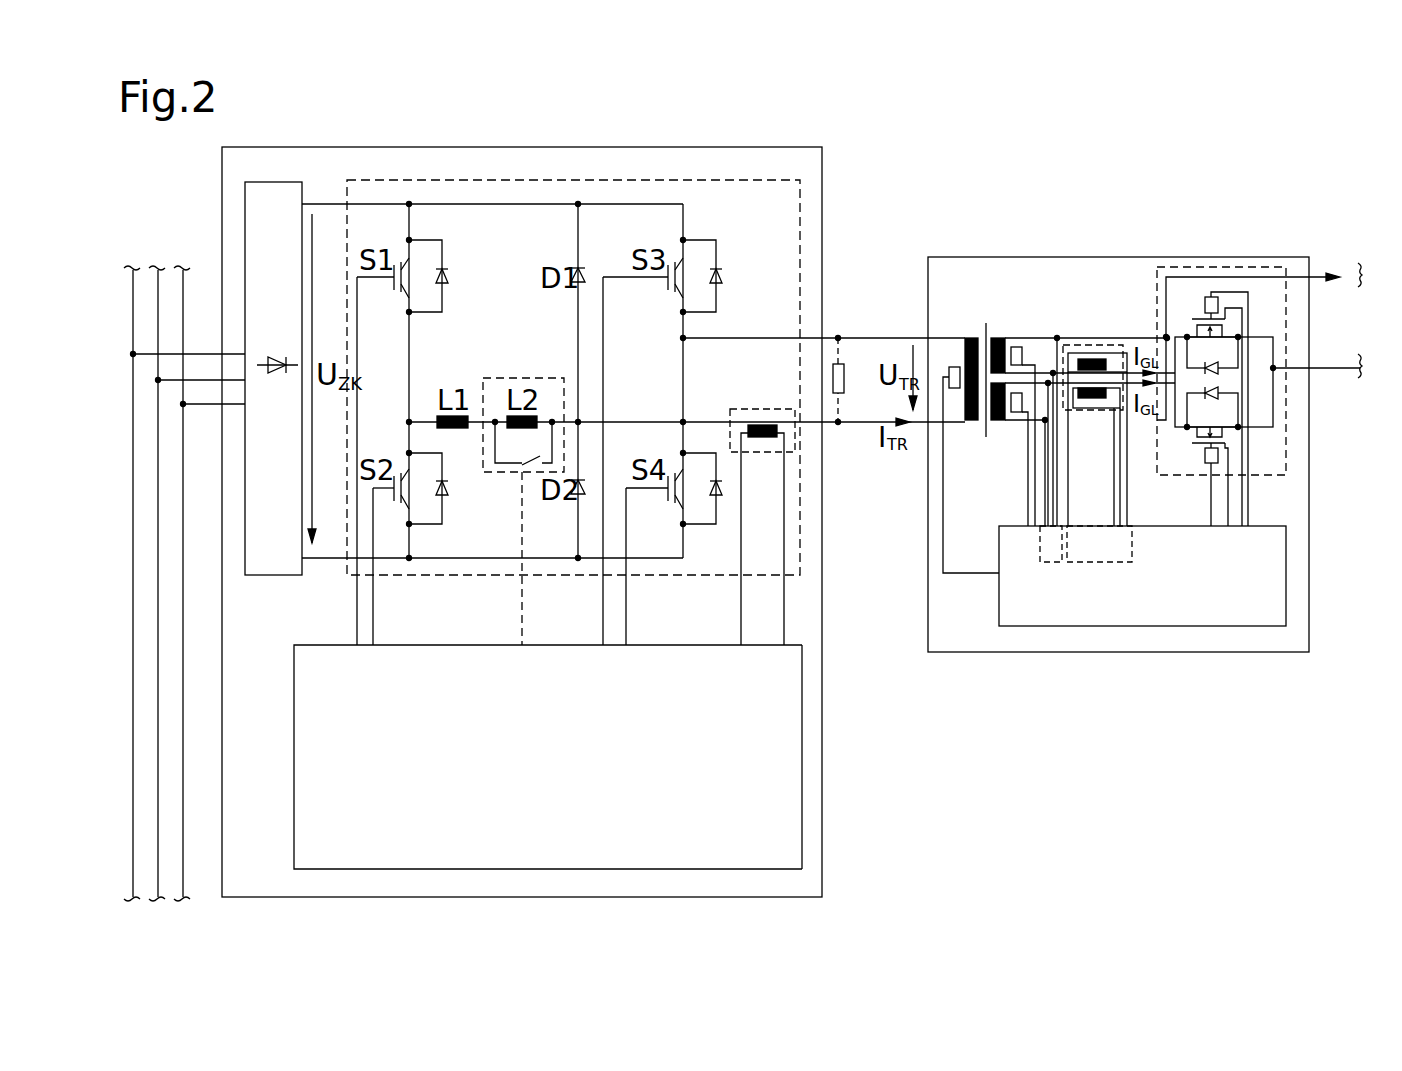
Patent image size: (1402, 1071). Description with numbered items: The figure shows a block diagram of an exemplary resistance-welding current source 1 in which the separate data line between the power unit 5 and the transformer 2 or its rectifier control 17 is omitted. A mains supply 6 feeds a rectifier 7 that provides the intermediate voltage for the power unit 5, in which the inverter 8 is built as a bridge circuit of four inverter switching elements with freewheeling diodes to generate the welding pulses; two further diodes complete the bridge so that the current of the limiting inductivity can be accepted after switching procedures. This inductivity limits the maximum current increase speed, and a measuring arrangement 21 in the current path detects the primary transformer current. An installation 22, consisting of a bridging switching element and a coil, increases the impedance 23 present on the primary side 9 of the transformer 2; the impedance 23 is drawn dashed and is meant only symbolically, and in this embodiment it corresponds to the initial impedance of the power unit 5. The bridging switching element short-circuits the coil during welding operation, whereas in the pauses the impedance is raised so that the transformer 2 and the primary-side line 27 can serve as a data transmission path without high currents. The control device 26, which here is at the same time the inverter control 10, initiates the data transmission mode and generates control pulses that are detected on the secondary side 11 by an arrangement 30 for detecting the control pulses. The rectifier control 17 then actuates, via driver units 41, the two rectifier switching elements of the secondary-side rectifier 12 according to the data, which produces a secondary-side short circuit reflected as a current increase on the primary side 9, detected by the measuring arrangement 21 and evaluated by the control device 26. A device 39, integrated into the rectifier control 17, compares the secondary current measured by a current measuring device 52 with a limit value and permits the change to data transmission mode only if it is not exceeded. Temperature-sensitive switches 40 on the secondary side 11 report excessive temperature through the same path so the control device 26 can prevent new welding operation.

The resistance-welding current source 1 is at (1120, 123).
The transformer 2 is at (988, 305).
The power unit 5 is at (562, 147).
The three-phase mains supply 6 is at (160, 245).
The rectifier 7 is at (273, 575).
The inverter 8 is at (675, 180).
The primary side 9 is at (962, 357).
The inverter control 10 is at (548, 757).
The secondary side 11 is at (1012, 337).
The secondary-side rectifier 12 is at (1286, 459).
The rectifier control 17 is at (1165, 595).
The measuring arrangement 21 is at (795, 452).
The installation 22 is at (548, 378).
The impedance 23 is at (840, 395).
The control device 26 is at (805, 828).
The primary-side line 27 is at (869, 420).
The arrangement for detecting the control pulses 30 is at (1052, 548).
The device for comparing the current with a limit value 39 is at (1102, 544).
The temperature-sensitive switches 40 is at (1016, 400).
The driver units 41 is at (1213, 308).
The current measuring device 52 is at (1082, 345).